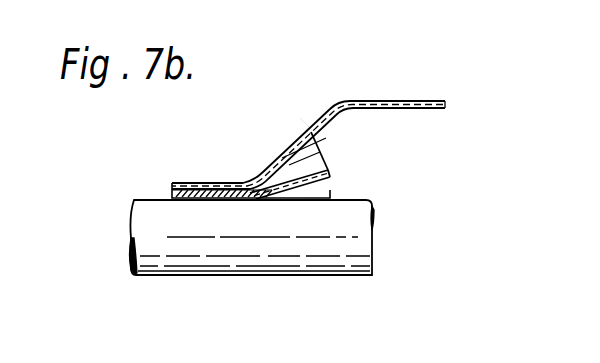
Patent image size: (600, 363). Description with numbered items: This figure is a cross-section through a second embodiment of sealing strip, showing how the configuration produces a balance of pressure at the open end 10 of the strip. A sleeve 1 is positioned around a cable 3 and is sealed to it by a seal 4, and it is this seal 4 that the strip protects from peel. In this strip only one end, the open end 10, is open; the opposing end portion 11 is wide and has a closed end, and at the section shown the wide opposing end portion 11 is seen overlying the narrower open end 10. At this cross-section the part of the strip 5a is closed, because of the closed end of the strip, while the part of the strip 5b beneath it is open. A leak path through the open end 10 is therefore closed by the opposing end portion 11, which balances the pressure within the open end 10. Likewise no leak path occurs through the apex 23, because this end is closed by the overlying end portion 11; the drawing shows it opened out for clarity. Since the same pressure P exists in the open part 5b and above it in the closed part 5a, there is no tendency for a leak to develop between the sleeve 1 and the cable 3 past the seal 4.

The sleeve 1 is at (417, 101).
The cable 3 is at (358, 241).
The seal 4 is at (182, 183).
The part of the strip 5a is at (310, 153).
The part of the strip 5b is at (327, 182).
The open end 10 is at (314, 199).
The opposing end portion 11 is at (305, 133).
The apex 23 is at (267, 198).
The pressure P is at (276, 165).